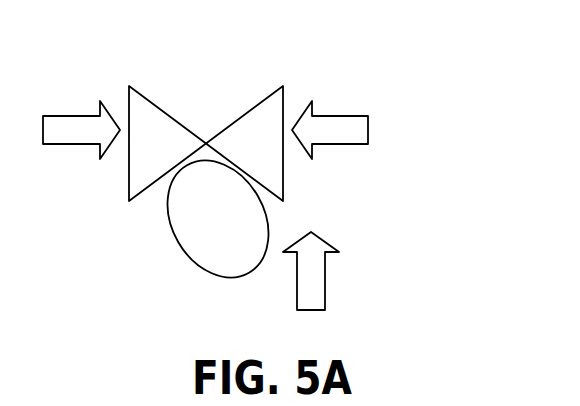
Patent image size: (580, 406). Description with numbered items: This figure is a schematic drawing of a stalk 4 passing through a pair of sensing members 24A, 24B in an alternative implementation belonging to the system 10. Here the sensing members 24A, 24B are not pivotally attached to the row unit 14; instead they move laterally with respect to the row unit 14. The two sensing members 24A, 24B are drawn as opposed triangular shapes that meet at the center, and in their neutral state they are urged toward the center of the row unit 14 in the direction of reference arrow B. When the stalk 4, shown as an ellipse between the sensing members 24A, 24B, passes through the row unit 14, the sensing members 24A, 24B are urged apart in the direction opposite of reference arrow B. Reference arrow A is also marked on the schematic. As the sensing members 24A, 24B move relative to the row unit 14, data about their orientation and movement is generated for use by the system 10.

The sensing member 24A is at (128, 103).
The sensing member 24B is at (285, 98).
The stalk 4 is at (182, 222).
The system 10 is at (460, 130).
The row unit 14 is at (520, 150).
The reference arrow A is at (321, 271).
The reference arrow B is at (81, 120).